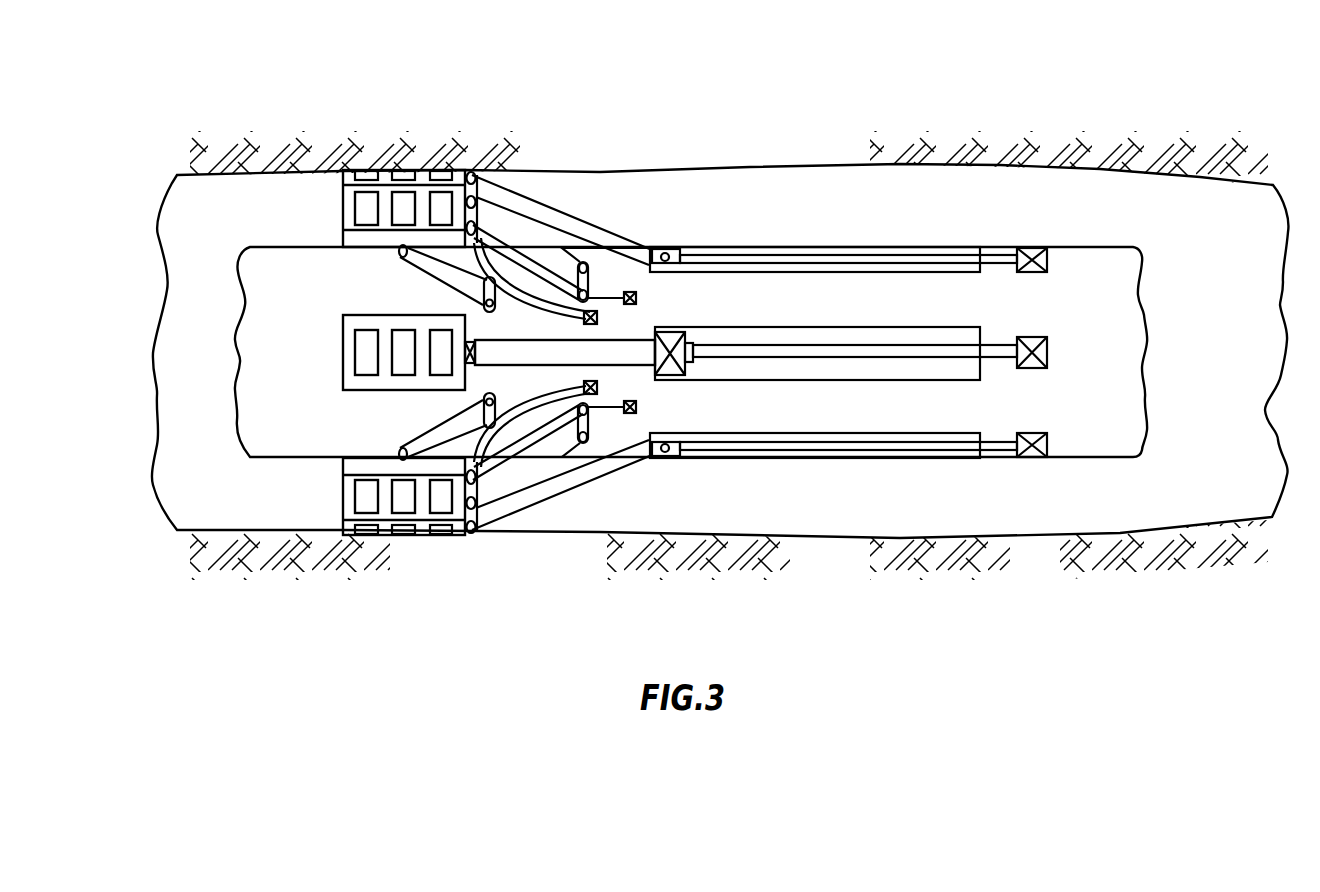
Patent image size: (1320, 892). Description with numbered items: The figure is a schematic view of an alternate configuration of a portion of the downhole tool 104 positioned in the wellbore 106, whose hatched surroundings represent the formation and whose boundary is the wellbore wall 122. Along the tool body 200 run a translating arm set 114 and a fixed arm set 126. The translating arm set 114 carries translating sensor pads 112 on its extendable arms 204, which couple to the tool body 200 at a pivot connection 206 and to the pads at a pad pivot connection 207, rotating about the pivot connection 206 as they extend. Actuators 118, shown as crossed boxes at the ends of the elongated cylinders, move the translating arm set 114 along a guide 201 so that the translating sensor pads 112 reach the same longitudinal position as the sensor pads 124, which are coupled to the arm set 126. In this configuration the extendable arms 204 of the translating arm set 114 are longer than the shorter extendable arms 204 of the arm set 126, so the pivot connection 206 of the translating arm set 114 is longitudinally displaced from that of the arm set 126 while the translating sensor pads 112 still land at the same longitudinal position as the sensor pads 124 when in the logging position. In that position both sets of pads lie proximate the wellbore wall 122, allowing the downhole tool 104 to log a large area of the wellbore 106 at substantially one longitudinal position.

The downhole tool 104 is at (843, 245).
The wellbore 106 is at (247, 220).
The translating sensor pads 112 is at (467, 175).
The translating arm set 114 is at (574, 197).
The actuators 118 is at (1030, 334).
The wellbore wall 122 is at (1028, 536).
The sensor pads 124 is at (432, 168).
The arm set 126 is at (408, 272).
The tool body 200 is at (913, 460).
The guide 201 is at (826, 270).
The extendable arms 204 is at (605, 232).
The pivot connection 206 is at (668, 255).
The pad pivot connection 207 is at (478, 203).